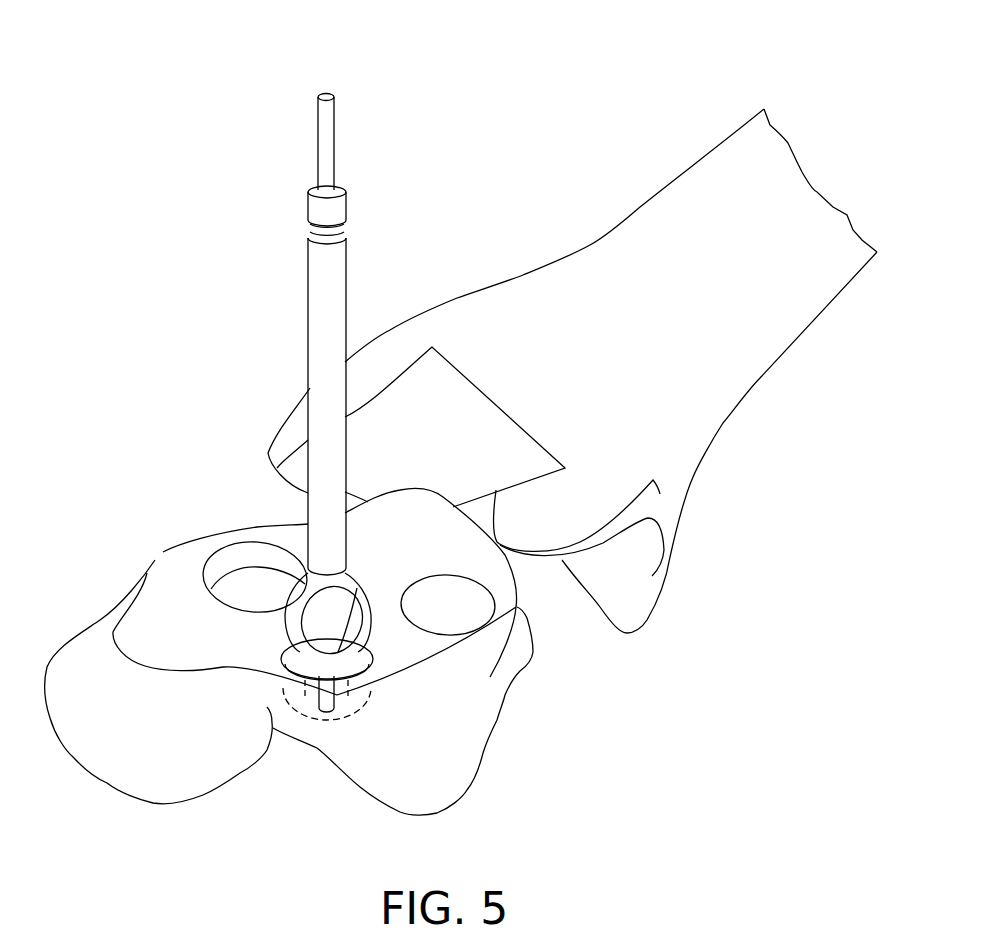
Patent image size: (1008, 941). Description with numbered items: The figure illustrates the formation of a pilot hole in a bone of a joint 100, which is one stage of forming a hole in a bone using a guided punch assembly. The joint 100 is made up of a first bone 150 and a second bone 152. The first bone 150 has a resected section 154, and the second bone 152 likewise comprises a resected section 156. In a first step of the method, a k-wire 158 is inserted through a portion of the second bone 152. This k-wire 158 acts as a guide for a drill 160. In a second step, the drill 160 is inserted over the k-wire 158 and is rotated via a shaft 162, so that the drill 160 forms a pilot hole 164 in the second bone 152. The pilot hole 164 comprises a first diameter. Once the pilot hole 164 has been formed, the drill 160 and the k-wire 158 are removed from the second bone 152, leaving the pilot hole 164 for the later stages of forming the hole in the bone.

The joint 100 is at (503, 97).
The first bone 150 is at (762, 373).
The second bone 152 is at (115, 753).
The resected section 154 is at (429, 378).
The resected section 156 is at (177, 553).
The k-wire 158 is at (323, 133).
The drill 160 is at (307, 583).
The shaft 162 is at (308, 255).
The pilot hole 164 is at (364, 692).